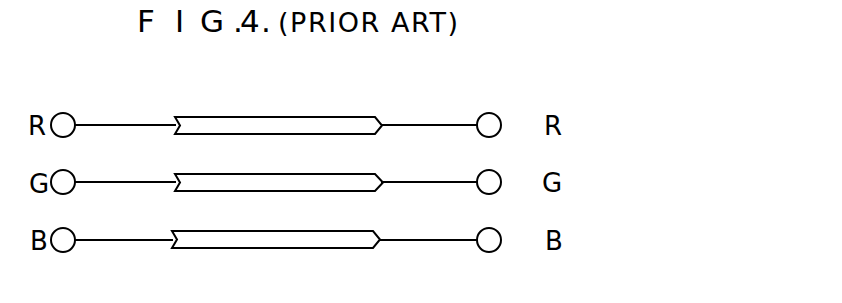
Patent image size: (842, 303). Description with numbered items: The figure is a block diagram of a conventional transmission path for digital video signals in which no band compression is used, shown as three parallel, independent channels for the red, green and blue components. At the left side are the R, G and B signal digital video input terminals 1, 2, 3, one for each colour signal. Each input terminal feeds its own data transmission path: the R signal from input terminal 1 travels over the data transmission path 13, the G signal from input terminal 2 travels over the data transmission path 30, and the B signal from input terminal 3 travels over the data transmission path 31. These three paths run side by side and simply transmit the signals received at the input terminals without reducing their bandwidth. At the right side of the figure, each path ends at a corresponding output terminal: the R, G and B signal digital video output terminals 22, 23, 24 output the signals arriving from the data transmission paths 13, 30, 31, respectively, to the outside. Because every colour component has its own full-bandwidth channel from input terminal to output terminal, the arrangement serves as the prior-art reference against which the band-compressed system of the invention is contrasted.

The R signal digital video input terminal 1 is at (68, 113).
The G signal digital video input terminal 2 is at (70, 173).
The B signal digital video input terminal 3 is at (70, 231).
The data transmission path 13 is at (316, 117).
The data transmission path 30 is at (303, 173).
The data transmission path 31 is at (303, 230).
The R signal digital video output terminal 22 is at (497, 115).
The G signal digital video output terminal 23 is at (496, 172).
The B signal digital video output terminal 24 is at (496, 230).